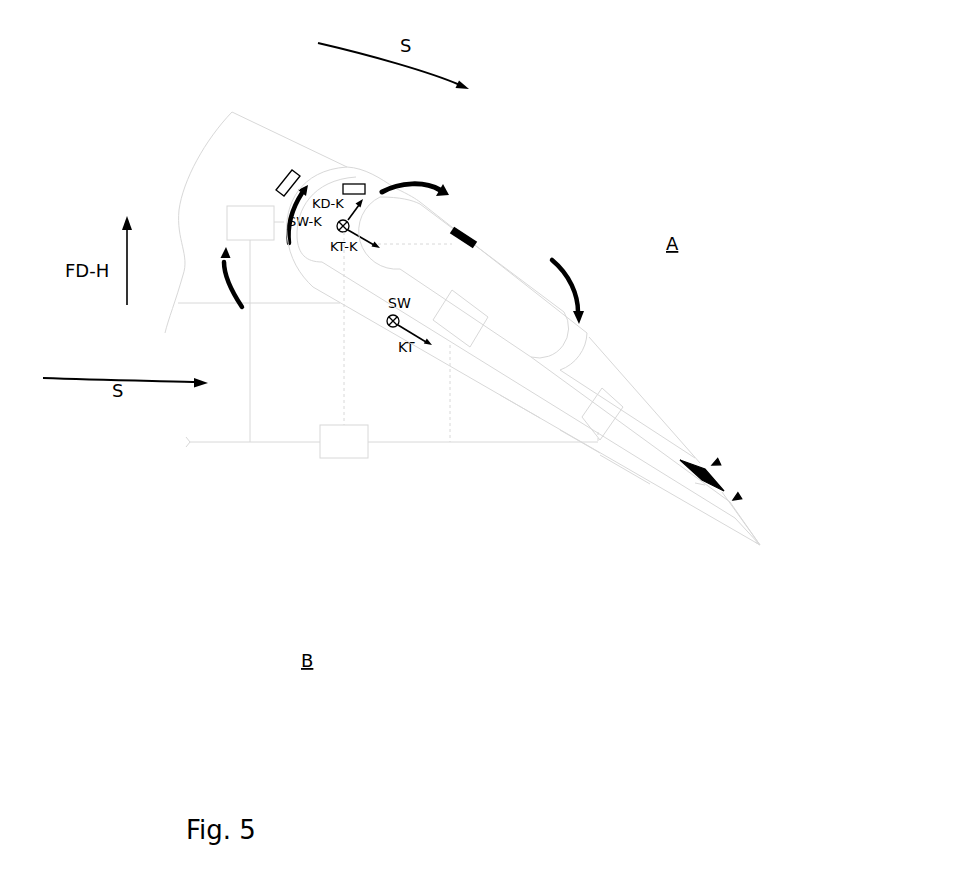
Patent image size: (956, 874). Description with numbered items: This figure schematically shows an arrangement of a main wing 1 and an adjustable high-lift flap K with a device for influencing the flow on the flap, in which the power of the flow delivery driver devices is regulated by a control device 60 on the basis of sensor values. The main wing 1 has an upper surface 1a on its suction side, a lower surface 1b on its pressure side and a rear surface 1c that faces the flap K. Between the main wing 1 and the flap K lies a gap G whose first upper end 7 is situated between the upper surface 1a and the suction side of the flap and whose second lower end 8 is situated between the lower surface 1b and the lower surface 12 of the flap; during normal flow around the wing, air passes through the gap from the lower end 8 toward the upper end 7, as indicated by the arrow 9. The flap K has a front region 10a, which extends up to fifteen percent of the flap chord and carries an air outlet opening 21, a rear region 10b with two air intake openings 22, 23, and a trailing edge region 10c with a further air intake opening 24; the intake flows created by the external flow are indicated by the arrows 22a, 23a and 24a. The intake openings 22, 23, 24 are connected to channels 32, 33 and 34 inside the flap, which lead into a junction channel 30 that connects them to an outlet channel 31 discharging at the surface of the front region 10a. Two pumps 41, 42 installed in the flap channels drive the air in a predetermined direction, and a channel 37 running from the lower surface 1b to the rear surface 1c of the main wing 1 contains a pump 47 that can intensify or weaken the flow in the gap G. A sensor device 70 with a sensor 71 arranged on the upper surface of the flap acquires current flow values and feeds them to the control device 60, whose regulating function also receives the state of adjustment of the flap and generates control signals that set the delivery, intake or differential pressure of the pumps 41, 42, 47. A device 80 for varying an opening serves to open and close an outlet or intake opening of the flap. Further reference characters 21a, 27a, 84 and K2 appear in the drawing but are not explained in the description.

The main wing 1 is at (207, 160).
The upper surface 1a is at (238, 128).
The lower surface 1b is at (190, 304).
The rear surface 1c is at (308, 282).
The first upper end 7 is at (363, 181).
The second lower end 8 is at (328, 307).
The arrow 9 is at (286, 205).
The front region 10a is at (332, 192).
The rear region 10b is at (658, 480).
The trailing edge region 10c is at (748, 535).
The lower surface 12 is at (583, 455).
The air outlet opening 21 is at (385, 185).
The outlet flow 21a is at (423, 185).
The air intake opening 22 is at (615, 443).
The arrow 22a is at (593, 358).
The air intake opening 23 is at (720, 456).
The arrow 23a is at (728, 465).
The air intake opening 24 is at (726, 491).
The arrow 24a is at (738, 497).
The inlet flow 27a is at (225, 287).
The junction channel 30 is at (480, 238).
The outlet channel 31 is at (368, 215).
The channel 32 is at (610, 468).
The channel 33 is at (697, 453).
The channel 34 is at (700, 485).
The channel 37 is at (223, 260).
The pump 41 is at (460, 318).
The pump 42 is at (602, 414).
The pump 47 is at (250, 223).
The control device 60 is at (392, 441).
The sensor device 70 is at (465, 210).
The sensor 71 is at (437, 300).
The device for varying an opening 80 is at (290, 177).
The actuator 84 is at (358, 184).
The gap G is at (297, 174).
The high-lift flap K is at (518, 407).
The trailing edge point K2 is at (760, 546).